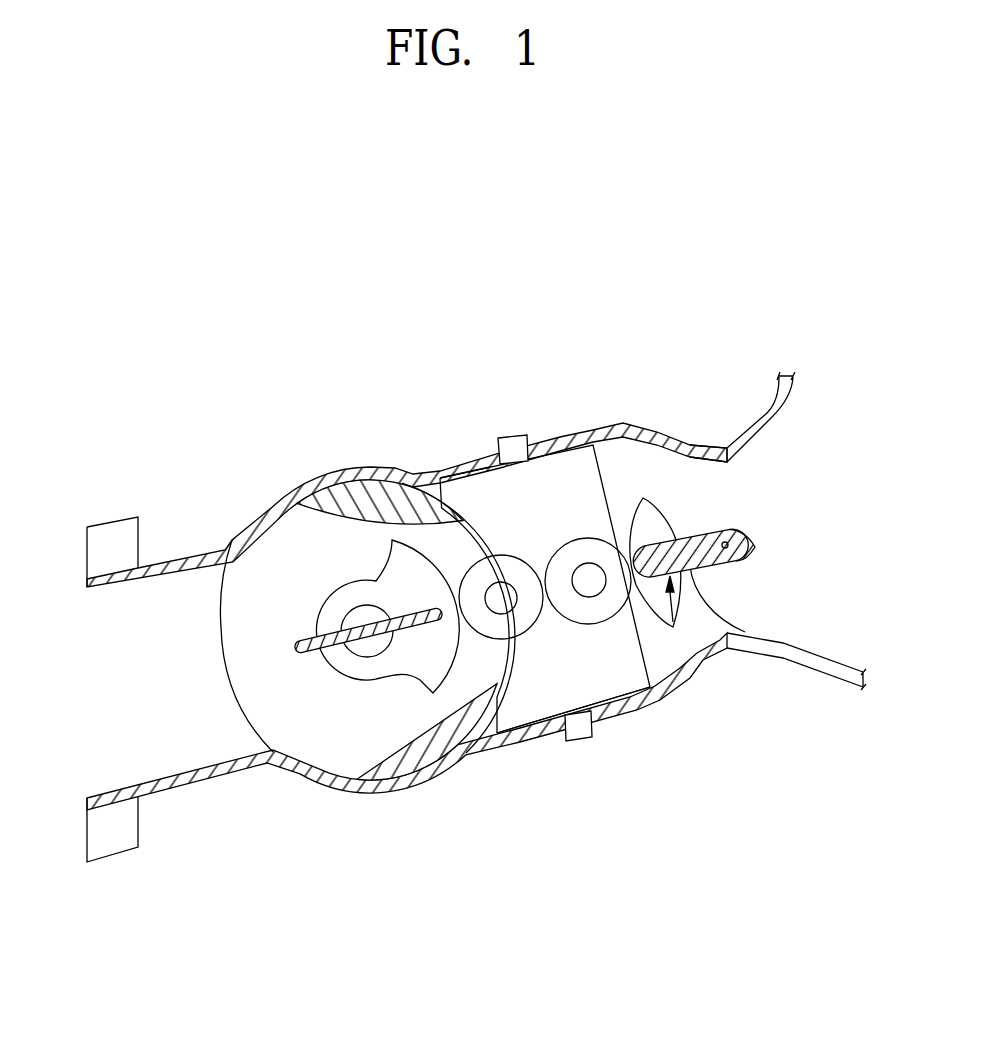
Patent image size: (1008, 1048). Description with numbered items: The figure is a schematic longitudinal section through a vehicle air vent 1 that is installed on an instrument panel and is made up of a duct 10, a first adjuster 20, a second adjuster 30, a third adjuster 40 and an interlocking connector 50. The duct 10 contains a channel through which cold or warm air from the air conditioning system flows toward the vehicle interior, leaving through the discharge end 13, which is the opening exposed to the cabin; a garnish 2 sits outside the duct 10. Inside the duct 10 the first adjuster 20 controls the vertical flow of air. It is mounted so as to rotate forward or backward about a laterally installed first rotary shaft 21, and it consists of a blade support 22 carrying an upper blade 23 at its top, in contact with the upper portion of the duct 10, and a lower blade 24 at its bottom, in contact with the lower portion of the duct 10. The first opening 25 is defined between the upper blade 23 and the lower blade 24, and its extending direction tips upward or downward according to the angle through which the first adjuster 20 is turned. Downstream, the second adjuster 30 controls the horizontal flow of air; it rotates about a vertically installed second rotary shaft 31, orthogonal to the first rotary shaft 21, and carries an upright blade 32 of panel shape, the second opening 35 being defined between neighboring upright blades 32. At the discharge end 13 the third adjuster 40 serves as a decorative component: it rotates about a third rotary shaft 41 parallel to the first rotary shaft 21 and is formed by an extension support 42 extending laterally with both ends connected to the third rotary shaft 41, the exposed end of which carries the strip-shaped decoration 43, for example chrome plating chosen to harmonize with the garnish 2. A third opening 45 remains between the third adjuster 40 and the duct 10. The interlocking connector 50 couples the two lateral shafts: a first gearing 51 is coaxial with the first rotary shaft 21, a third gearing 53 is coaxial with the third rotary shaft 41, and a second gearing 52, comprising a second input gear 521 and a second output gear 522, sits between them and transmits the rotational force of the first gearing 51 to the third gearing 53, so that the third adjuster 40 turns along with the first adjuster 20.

The vehicle air vent 1 is at (140, 458).
The garnish 2 is at (767, 417).
The duct 10 is at (196, 800).
The discharge end 13 is at (690, 486).
The first adjuster 20 is at (419, 470).
The first rotary shaft 21 is at (353, 603).
The blade support 22 is at (265, 567).
The upper blade 23 is at (347, 494).
The lower blade 24 is at (405, 757).
The first opening 25 is at (285, 578).
The second adjuster 30 is at (610, 460).
The second rotary shaft 31 is at (513, 438).
The upright blade 32 is at (566, 466).
The second opening 35 is at (493, 501).
The third adjuster 40 is at (732, 551).
The third rotary shaft 41 is at (732, 504).
The extension support 42 is at (748, 645).
The decoration 43 is at (756, 546).
The third opening 45 is at (707, 593).
The interlocking connector 50 is at (579, 699).
The first gearing 51 is at (485, 740).
The second gearing 52 is at (553, 693).
The second input gear 521 is at (523, 635).
The second output gear 522 is at (589, 624).
The third gearing 53 is at (667, 607).